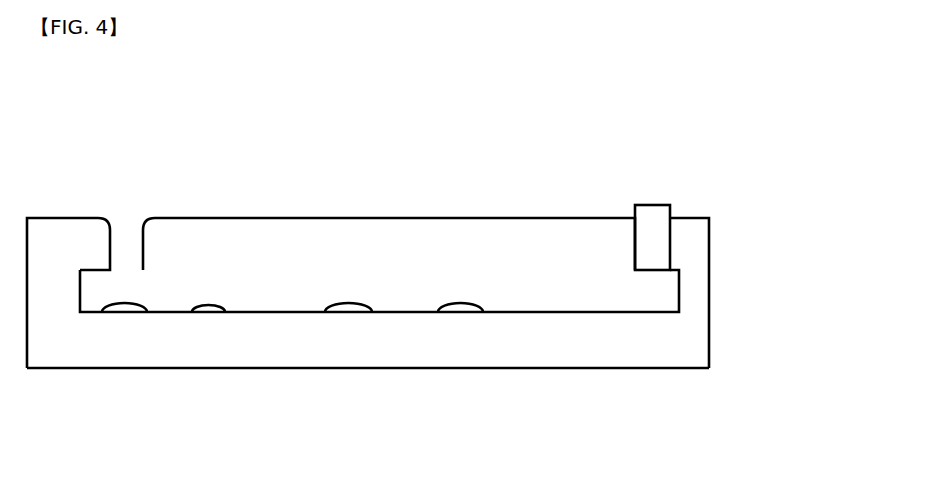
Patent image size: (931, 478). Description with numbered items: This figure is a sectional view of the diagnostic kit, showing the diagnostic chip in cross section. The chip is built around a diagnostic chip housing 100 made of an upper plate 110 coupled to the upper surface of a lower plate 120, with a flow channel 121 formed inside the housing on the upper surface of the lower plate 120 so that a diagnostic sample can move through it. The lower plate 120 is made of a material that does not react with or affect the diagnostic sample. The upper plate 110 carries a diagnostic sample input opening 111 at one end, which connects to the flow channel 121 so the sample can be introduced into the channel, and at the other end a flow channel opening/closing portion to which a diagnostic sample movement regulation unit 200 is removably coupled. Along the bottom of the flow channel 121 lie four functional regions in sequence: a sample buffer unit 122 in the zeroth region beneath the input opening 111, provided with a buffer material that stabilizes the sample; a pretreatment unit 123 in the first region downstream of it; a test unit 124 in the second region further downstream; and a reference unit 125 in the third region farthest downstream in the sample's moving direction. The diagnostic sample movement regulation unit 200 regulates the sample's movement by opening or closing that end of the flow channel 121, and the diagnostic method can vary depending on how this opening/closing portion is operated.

The diagnostic chip housing 100 is at (40, 82).
The upper plate 110 is at (695, 240).
The diagnostic sample input opening 111 is at (130, 254).
The lower plate 120 is at (585, 342).
The flow channel 121 is at (541, 290).
The sample buffer unit 122 is at (125, 312).
The pretreatment unit 123 is at (207, 312).
The test unit 124 is at (353, 312).
The reference unit 125 is at (460, 312).
The diagnostic sample movement regulation unit 200 is at (645, 230).